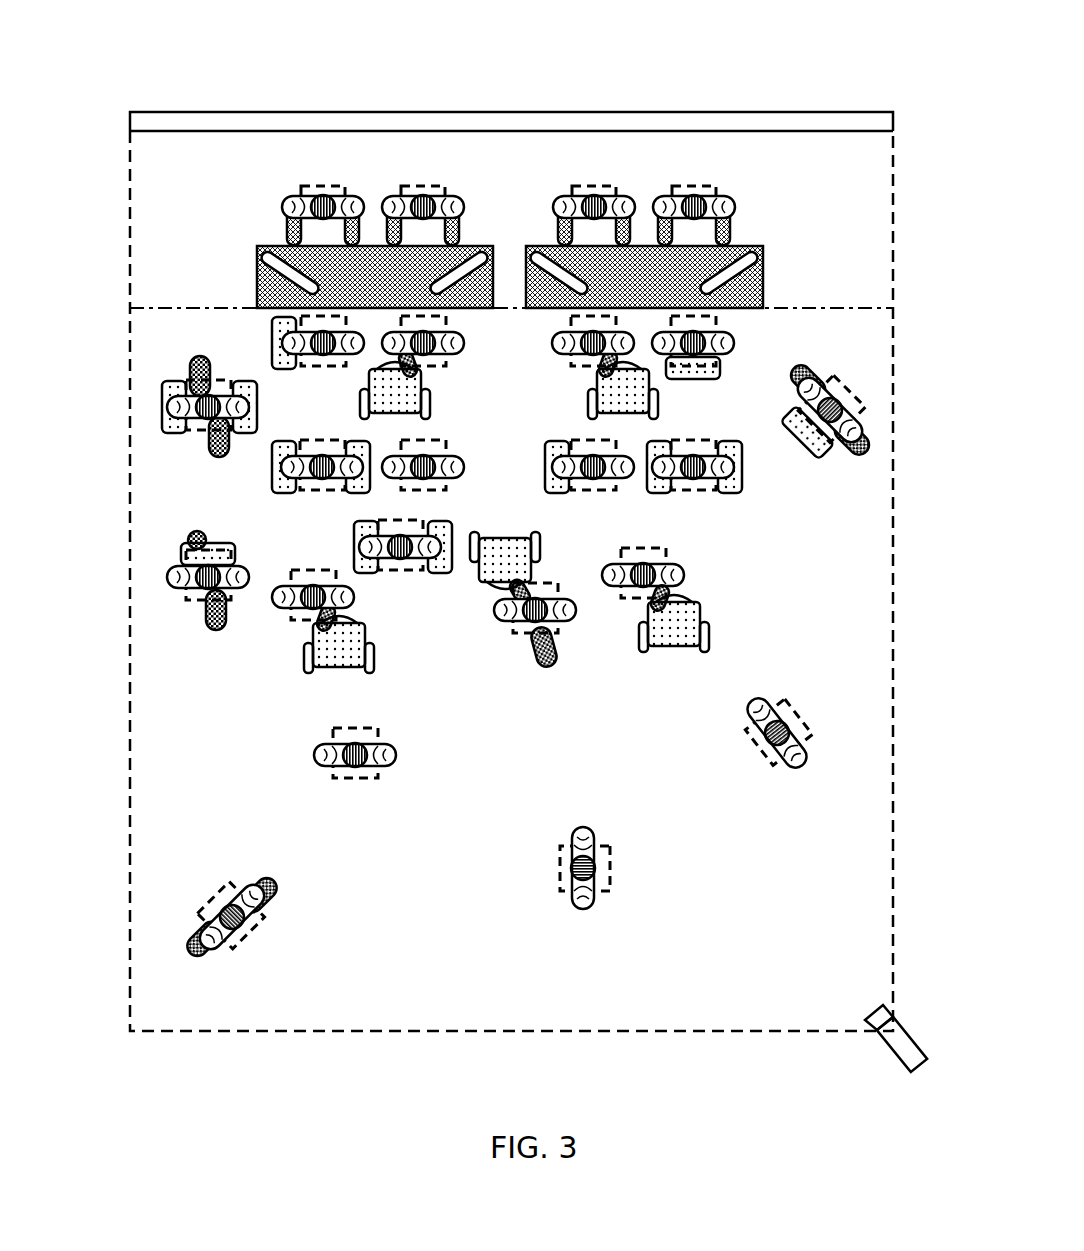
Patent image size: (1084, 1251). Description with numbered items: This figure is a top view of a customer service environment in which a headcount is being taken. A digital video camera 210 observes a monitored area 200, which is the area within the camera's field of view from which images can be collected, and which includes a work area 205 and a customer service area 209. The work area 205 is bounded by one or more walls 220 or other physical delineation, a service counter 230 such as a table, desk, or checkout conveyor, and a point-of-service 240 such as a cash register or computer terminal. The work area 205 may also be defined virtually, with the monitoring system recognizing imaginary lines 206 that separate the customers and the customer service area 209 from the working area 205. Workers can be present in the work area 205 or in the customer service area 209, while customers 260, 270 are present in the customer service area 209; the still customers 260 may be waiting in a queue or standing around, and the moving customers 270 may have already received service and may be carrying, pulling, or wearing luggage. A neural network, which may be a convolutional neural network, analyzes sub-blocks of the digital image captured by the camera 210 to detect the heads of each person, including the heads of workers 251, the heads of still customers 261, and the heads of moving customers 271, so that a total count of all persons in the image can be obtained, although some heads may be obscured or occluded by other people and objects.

The monitored area 200 is at (290, 78).
The work area 205 is at (242, 193).
The imaginary lines 206 is at (159, 316).
The customer service area 209 is at (480, 908).
The digital video camera 210 is at (905, 1052).
The walls 220 is at (700, 125).
The service counter 230 is at (258, 298).
The point-of-service 240 is at (258, 262).
The heads of workers 251 is at (322, 185).
The still customers 260 is at (680, 573).
The heads of still customers 261 is at (700, 325).
The moving customers 270 is at (185, 577).
The heads of moving customers 271 is at (180, 408).